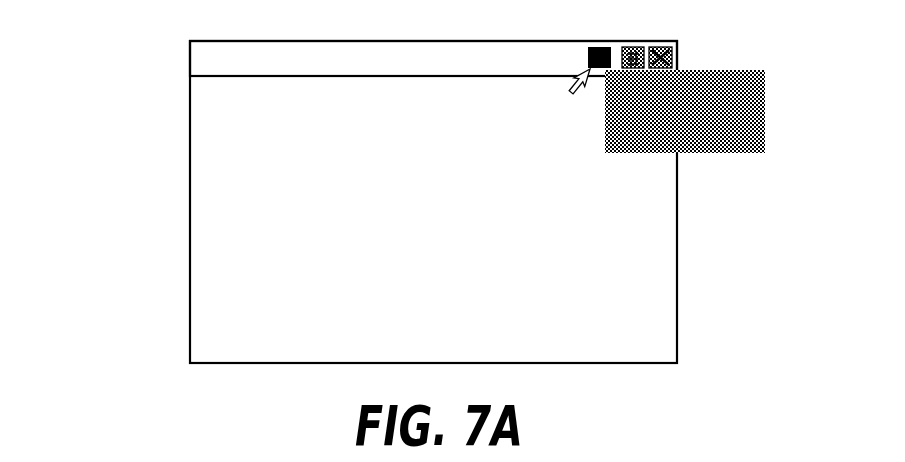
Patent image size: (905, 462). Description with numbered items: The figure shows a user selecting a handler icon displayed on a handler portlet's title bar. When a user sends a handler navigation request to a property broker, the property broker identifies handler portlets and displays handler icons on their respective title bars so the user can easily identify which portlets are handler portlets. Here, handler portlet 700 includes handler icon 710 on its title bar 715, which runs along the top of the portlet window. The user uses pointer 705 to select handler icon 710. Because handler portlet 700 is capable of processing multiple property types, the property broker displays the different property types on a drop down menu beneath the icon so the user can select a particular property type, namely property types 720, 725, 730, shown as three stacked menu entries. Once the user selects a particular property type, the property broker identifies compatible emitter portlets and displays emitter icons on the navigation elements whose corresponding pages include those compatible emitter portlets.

The handler portlet 700 is at (356, 202).
The pointer 705 is at (545, 93).
The handler icon 710 is at (603, 47).
The title bar 715 is at (405, 42).
The property type 720 is at (732, 77).
The property type 725 is at (732, 104).
The property type 730 is at (732, 130).